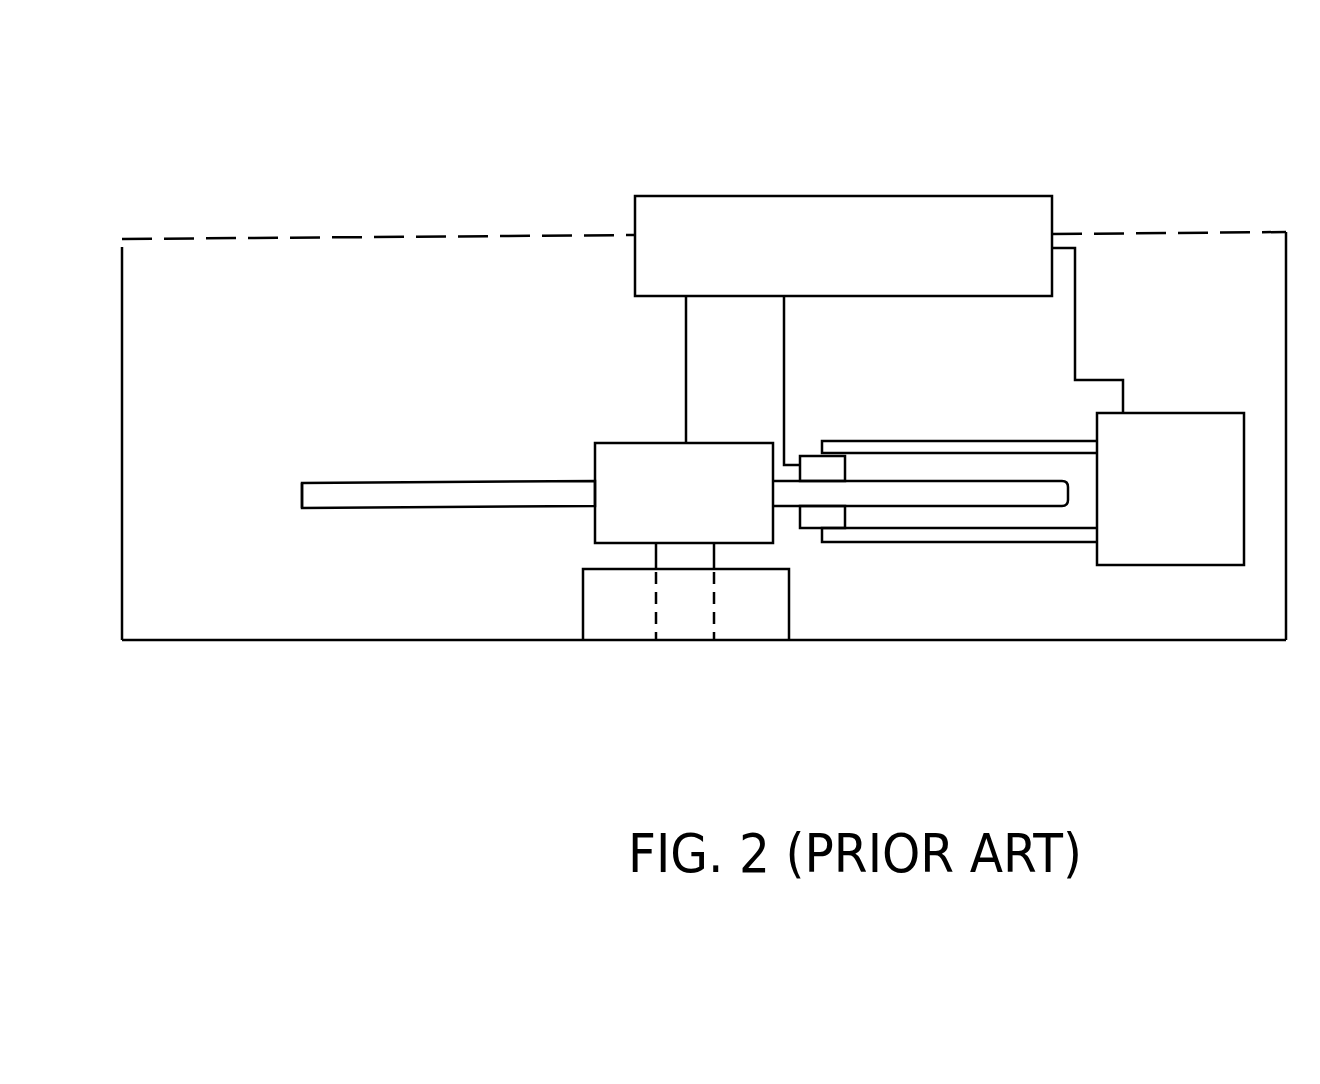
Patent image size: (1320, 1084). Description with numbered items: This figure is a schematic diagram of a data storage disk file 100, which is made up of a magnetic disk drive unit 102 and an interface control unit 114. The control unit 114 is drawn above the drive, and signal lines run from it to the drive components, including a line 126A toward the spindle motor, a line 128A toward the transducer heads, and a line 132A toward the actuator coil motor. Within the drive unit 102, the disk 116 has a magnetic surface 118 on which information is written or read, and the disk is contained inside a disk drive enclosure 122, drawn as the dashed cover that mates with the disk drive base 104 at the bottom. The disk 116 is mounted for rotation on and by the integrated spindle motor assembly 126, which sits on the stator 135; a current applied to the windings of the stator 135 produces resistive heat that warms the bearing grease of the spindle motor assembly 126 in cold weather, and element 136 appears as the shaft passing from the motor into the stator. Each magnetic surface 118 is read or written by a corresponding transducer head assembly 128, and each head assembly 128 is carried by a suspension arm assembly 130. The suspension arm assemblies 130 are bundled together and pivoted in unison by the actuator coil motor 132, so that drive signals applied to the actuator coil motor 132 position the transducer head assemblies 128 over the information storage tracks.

The data storage disk file 100 is at (346, 121).
The magnetic disk drive unit 102 is at (480, 368).
The disk drive base 104 is at (166, 642).
The interface control unit 114 is at (843, 246).
The disk 116 is at (302, 493).
The magnetic surface 118 is at (441, 482).
The disk drive enclosure 122 is at (122, 265).
The spindle motor assembly 126 is at (684, 493).
The spindle 126A is at (650, 369).
The transducer head assembly 128 is at (811, 465).
The control line to piezoelectric elements 128A is at (816, 380).
The suspension arm assembly 130 is at (945, 440).
The actuator coil motor 132 is at (1170, 489).
The control line to support block 132A is at (1097, 329).
The stator 135 is at (764, 628).
The pivot shaft 136 is at (686, 641).